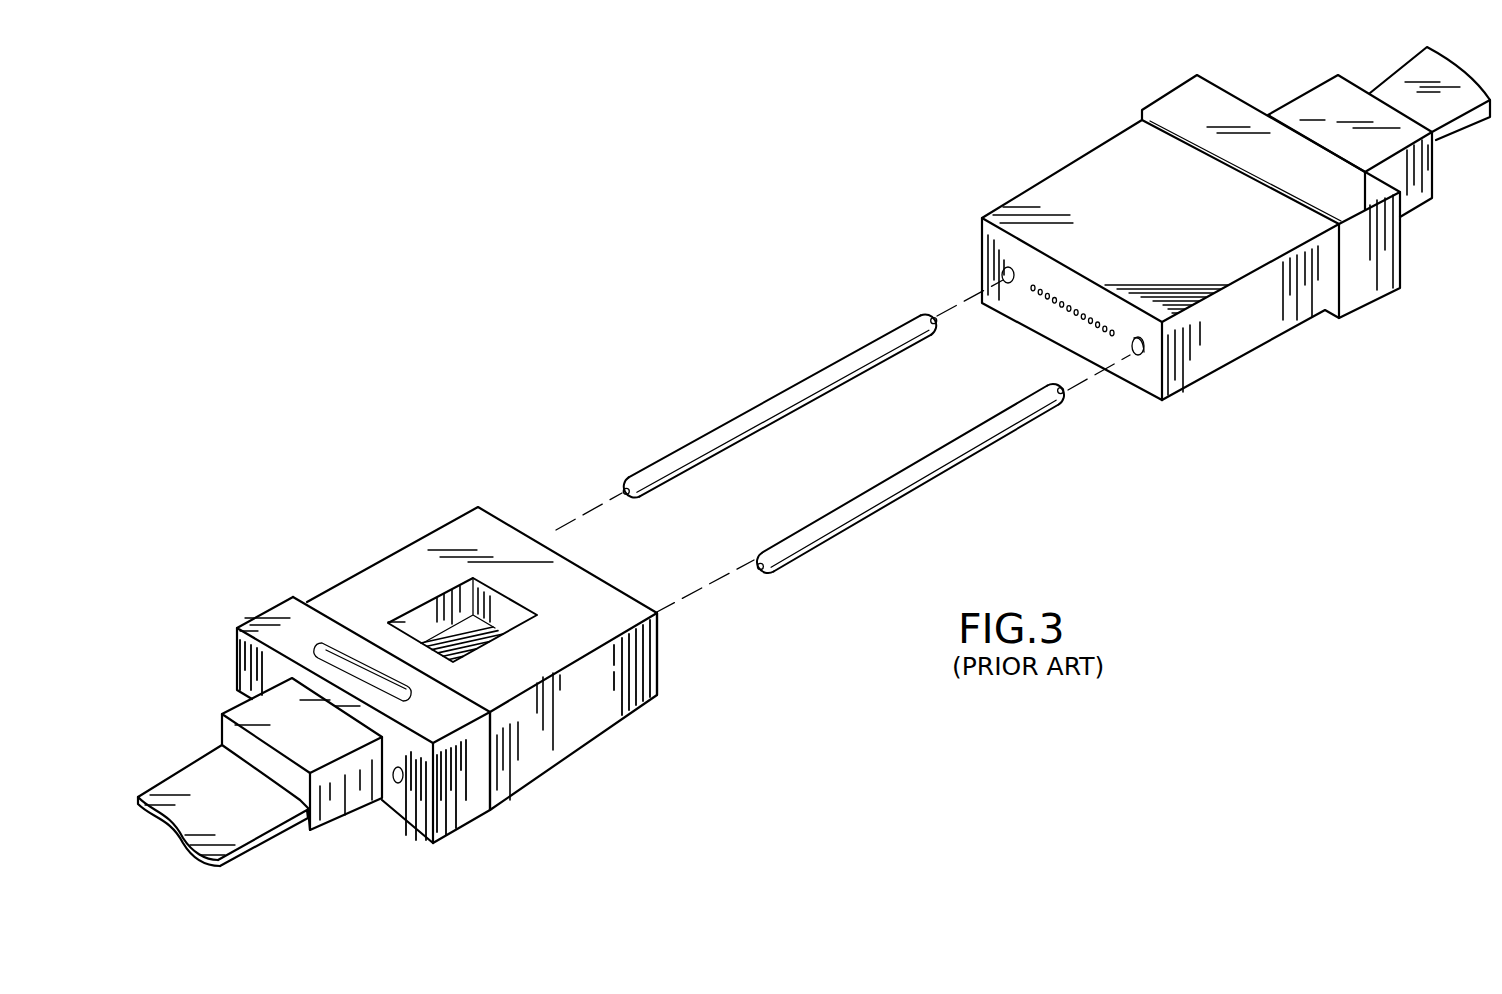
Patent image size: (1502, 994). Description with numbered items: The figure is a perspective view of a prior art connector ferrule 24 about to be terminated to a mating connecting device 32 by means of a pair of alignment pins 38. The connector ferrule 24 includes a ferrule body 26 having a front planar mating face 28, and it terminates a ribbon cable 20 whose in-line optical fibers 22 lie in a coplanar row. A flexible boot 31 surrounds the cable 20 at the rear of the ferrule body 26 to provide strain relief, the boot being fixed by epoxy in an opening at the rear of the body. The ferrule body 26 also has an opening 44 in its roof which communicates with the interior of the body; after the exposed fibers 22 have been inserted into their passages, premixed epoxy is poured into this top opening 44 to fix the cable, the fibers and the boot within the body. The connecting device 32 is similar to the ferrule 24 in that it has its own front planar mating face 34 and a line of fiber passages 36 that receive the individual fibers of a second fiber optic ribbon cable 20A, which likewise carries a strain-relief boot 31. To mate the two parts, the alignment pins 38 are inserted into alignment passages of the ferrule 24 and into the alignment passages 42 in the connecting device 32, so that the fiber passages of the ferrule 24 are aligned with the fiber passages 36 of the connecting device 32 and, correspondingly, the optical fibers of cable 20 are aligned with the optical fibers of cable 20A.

The ribbon cable 20 is at (196, 780).
The second fiber optic ribbon cable 20A is at (1463, 158).
The optical fibers 22 is at (459, 633).
The connector ferrule 24 is at (311, 570).
The ferrule body 26 is at (560, 738).
The front planar mating face 28 is at (660, 668).
The flexible boot 31 is at (262, 707).
The connecting device 32 is at (1095, 127).
The front planar mating face 34 is at (1122, 372).
The fiber passages 36 is at (1097, 327).
The alignment pins 38 is at (807, 385).
The alignment passages 42 is at (1003, 273).
The opening 44 is at (488, 598).